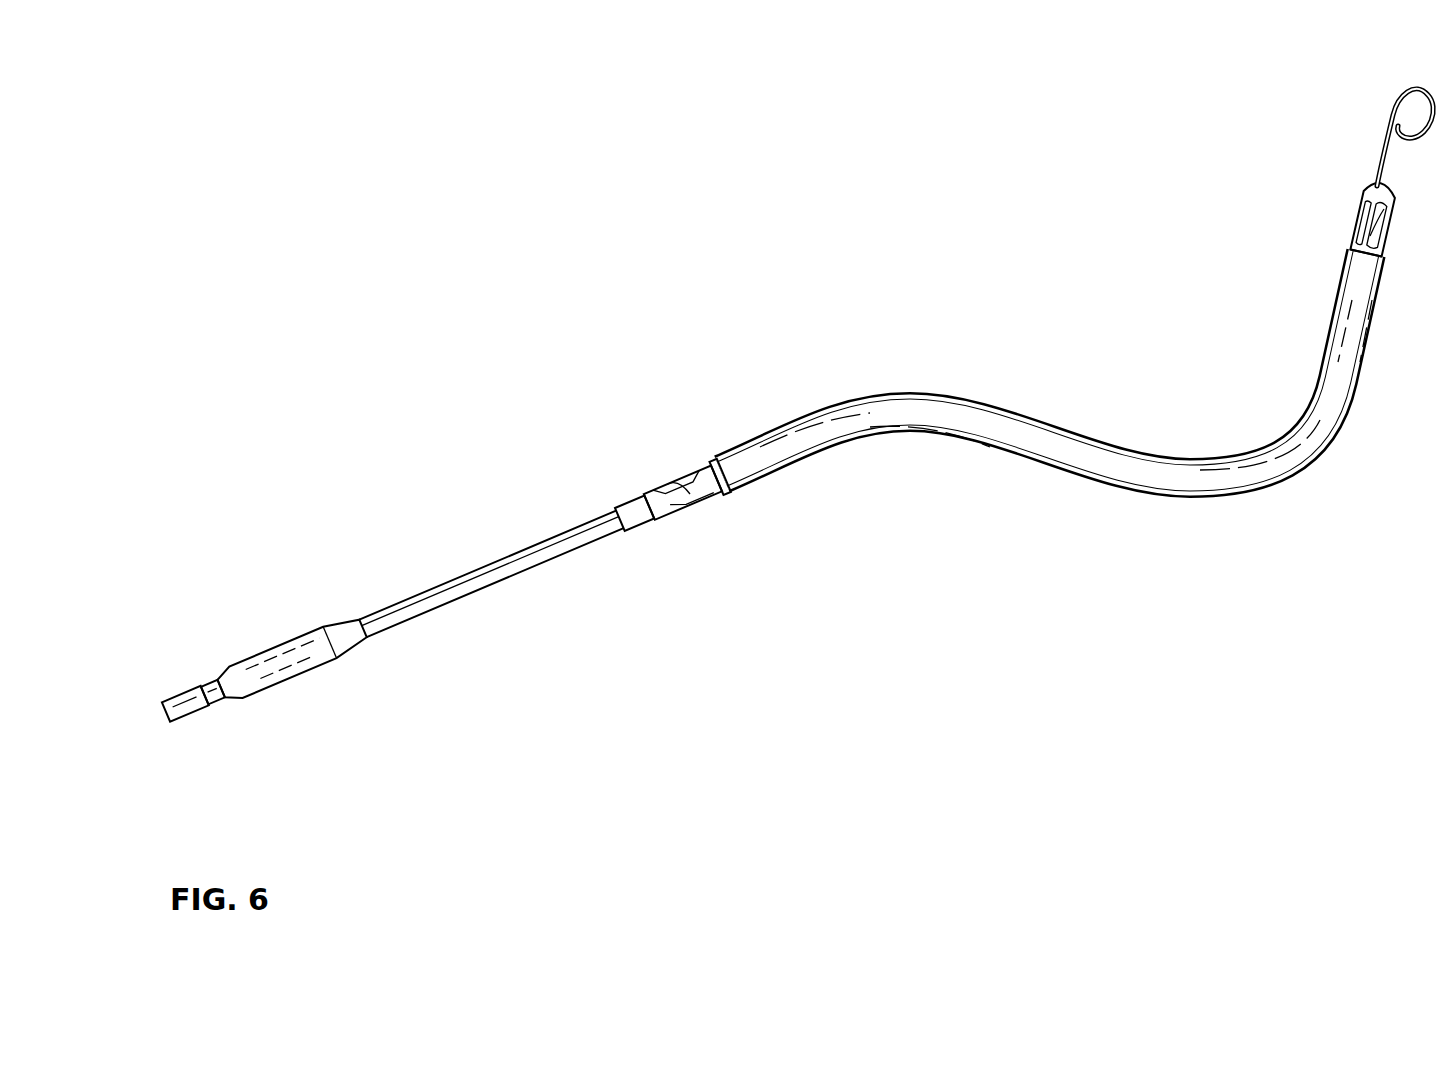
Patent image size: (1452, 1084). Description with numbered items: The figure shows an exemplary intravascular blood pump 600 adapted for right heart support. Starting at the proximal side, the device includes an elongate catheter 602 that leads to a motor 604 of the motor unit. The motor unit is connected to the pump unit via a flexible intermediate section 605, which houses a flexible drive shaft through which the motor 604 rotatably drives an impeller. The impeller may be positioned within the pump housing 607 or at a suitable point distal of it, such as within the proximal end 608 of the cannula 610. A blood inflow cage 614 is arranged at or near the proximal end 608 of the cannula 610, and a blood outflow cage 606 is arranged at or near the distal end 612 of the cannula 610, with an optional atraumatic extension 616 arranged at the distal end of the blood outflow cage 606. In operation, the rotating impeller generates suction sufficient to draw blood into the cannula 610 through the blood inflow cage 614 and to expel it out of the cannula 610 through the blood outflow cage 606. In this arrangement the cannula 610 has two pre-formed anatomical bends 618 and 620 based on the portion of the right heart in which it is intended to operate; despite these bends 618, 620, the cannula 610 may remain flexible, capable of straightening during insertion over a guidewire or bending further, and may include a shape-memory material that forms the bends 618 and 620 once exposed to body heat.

The intravascular blood pump 600 is at (274, 790).
The elongate catheter 602 is at (172, 700).
The motor 604 is at (279, 645).
The flexible intermediate section 605 is at (490, 567).
The blood outflow cage 606 is at (1360, 230).
The pump housing 607 is at (715, 493).
The proximal end of the cannula 608 is at (733, 451).
The cannula 610 is at (1060, 431).
The distal end of the cannula 612 is at (1350, 288).
The blood inflow cage 614 is at (682, 470).
The atraumatic extension 616 is at (1383, 140).
The pre-formed anatomical bend 618 is at (884, 433).
The pre-formed anatomical bend 620 is at (1262, 492).